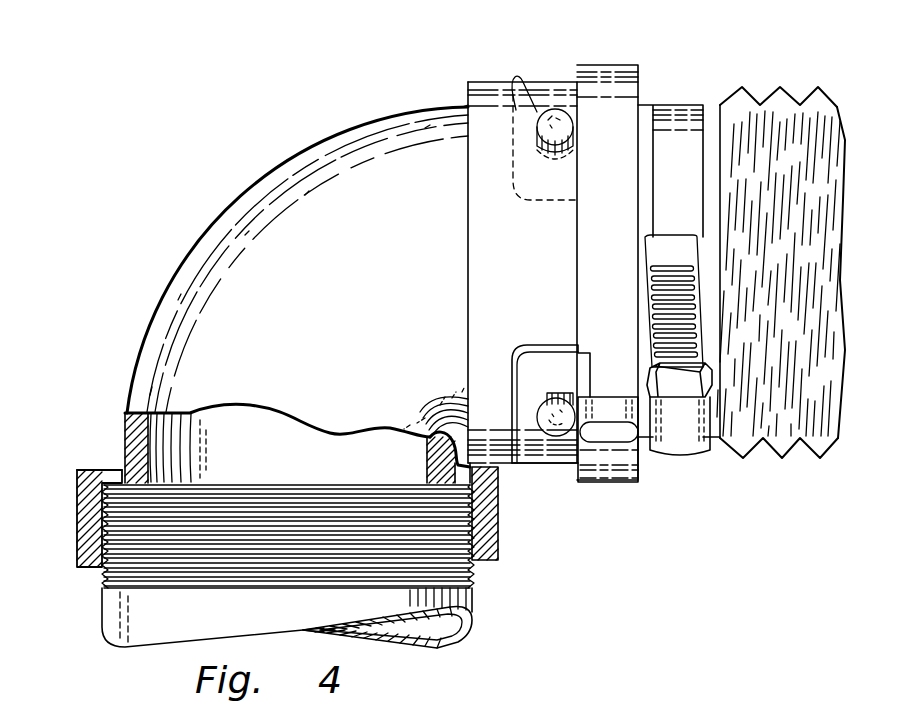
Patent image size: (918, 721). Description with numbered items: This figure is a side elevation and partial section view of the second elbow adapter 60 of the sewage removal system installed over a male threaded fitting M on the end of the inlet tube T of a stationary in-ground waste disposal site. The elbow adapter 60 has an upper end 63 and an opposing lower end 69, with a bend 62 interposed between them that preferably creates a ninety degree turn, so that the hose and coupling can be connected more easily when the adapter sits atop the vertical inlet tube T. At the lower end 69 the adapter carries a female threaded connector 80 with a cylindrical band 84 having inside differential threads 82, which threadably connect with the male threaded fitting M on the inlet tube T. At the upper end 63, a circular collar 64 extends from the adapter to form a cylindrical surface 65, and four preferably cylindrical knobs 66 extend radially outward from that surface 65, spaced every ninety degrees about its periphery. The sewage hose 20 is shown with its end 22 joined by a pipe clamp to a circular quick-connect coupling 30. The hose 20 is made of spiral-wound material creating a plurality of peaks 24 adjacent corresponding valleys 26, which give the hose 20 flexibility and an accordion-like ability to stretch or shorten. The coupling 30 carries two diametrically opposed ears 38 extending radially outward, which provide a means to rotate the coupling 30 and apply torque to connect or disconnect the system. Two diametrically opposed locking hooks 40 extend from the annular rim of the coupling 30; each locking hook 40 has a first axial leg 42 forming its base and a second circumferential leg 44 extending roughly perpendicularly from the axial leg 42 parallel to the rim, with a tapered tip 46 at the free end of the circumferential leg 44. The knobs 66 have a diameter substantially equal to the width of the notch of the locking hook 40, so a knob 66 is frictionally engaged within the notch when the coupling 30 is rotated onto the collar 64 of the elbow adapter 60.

The sewage hose 20 is at (786, 263).
The hose end 22 is at (676, 122).
The peaks 24 is at (820, 458).
The valleys 26 is at (762, 100).
The quick-connect coupling 30 is at (600, 80).
The ears 38 is at (612, 435).
The locking hook 40 is at (520, 352).
The first axial leg 42 is at (560, 367).
The second circumferential leg 44 is at (480, 407).
The tapered tip 46 is at (513, 75).
The elbow adapter 60 is at (247, 196).
The bend 62 is at (203, 244).
The upper end 63 is at (463, 107).
The circular collar 64 is at (467, 100).
The cylindrical surface 65 is at (487, 100).
The cylindrical knobs 66 is at (553, 118).
The lower end 69 is at (120, 470).
The female threaded connector 80 is at (78, 470).
The inside differential threads 82 is at (70, 487).
The cylindrical band 84 is at (78, 478).
The male threaded fitting M is at (112, 613).
The inlet tube T is at (475, 622).